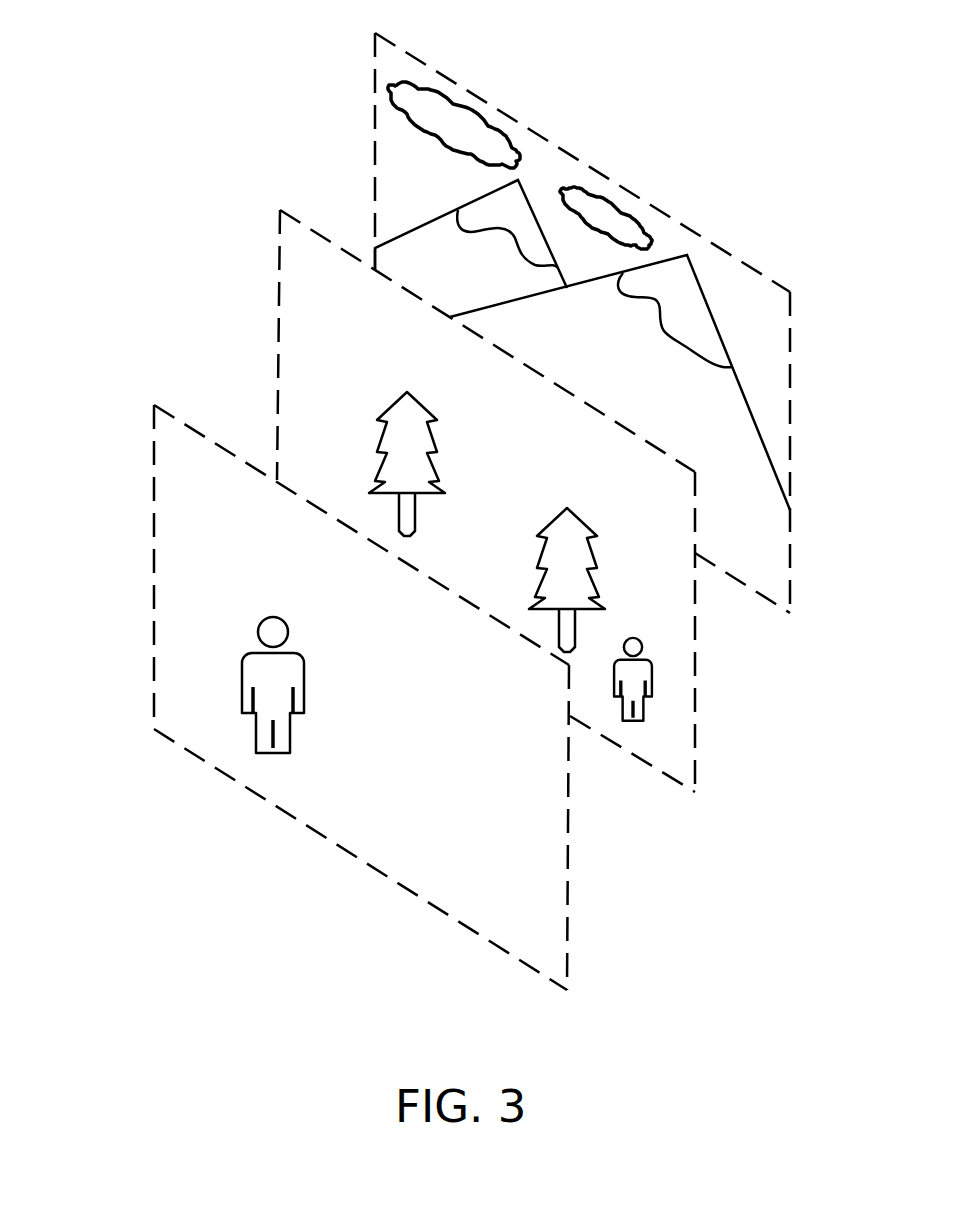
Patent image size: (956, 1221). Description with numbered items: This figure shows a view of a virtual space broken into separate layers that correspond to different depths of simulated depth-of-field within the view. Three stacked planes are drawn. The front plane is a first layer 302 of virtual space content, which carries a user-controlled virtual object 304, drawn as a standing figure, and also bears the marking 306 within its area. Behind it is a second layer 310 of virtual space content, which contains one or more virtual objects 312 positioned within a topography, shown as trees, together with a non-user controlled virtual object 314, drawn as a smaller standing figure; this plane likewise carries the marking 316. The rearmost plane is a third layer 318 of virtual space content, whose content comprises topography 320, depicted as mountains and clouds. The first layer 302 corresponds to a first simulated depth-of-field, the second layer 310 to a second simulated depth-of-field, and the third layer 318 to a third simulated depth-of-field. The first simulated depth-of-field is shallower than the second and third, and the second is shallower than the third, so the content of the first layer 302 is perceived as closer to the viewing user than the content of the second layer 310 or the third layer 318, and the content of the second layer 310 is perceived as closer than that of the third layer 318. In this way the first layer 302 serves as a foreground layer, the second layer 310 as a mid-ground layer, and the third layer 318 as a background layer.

The first layer 302 is at (153, 727).
The user-controlled virtual object 304 is at (243, 693).
The first layer label 306 is at (523, 837).
The second layer 310 is at (278, 326).
The virtual objects 312 is at (378, 443).
The non-user controlled virtual object 314 is at (647, 712).
The second layer label 316 is at (655, 490).
The third layer 318 is at (377, 121).
The topography 320 is at (527, 188).